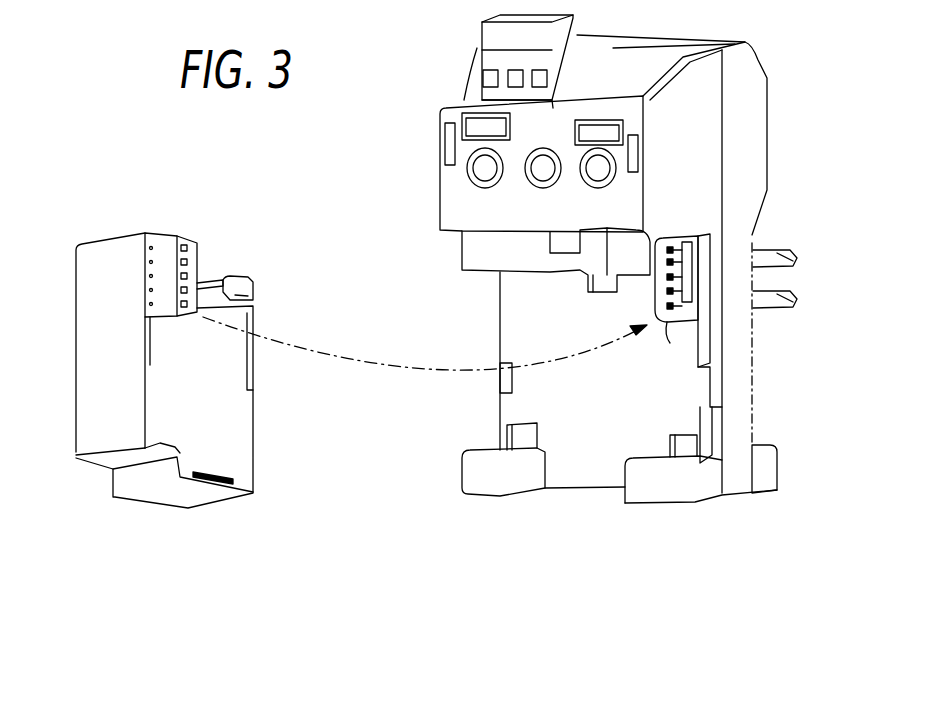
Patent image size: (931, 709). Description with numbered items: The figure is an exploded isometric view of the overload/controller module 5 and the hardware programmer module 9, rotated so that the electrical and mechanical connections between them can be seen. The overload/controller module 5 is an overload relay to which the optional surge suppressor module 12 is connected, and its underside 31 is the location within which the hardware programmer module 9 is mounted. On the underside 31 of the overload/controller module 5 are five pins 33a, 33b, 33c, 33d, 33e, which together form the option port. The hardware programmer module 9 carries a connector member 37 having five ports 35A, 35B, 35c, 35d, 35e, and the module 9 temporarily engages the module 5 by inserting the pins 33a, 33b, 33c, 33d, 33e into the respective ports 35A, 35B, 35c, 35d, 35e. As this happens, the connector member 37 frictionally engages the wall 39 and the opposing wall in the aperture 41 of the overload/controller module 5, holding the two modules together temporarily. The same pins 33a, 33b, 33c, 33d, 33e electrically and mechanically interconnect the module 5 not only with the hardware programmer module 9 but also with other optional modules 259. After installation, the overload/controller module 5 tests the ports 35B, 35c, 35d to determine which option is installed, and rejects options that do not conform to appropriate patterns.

The overload/controller module 5 is at (636, 256).
The surge suppressor module 12 is at (484, 25).
The underside 31 is at (601, 394).
The pin 33a is at (680, 248).
The pin 33b is at (684, 262).
The pin 33c is at (670, 279).
The pin 33d is at (683, 291).
The pin 33e is at (675, 310).
The wall 39 is at (693, 278).
The aperture 41 is at (683, 343).
The hardware programmer module 9 is at (152, 348).
The connector member 37 is at (180, 274).
The port 35A is at (181, 242).
The port 35B is at (185, 262).
The port 35c is at (182, 276).
The port 35d is at (182, 291).
The port 35e is at (181, 307).
The optional modules 259 is at (152, 402).